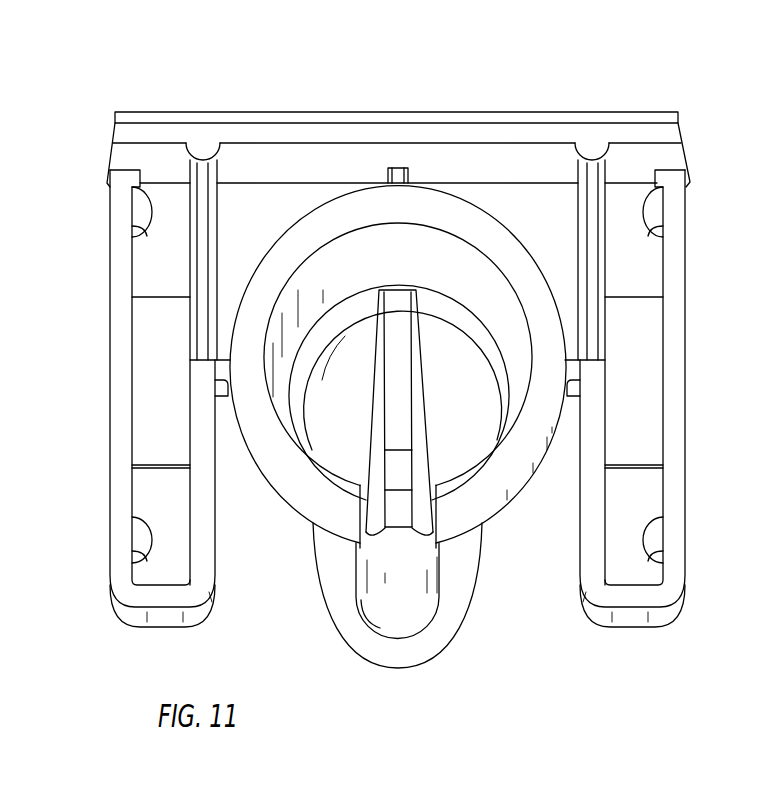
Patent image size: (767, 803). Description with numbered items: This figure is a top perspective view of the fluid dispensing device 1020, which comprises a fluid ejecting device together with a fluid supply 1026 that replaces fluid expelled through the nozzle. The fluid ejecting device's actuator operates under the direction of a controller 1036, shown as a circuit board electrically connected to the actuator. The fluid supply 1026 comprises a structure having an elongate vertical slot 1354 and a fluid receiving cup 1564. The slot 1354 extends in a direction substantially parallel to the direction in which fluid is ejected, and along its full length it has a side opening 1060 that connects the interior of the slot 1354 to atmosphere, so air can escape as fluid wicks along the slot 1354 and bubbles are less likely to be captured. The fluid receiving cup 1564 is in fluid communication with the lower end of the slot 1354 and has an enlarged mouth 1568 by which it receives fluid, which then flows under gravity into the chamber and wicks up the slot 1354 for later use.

The fluid dispensing device 1020 is at (180, 92).
The controller 1036 is at (681, 117).
The fluid supply 1026 is at (110, 270).
The elongate vertical slot 1354 is at (403, 337).
The side opening 1060 is at (422, 527).
The fluid receiving cup 1564 is at (427, 660).
The mouth 1568 is at (393, 638).